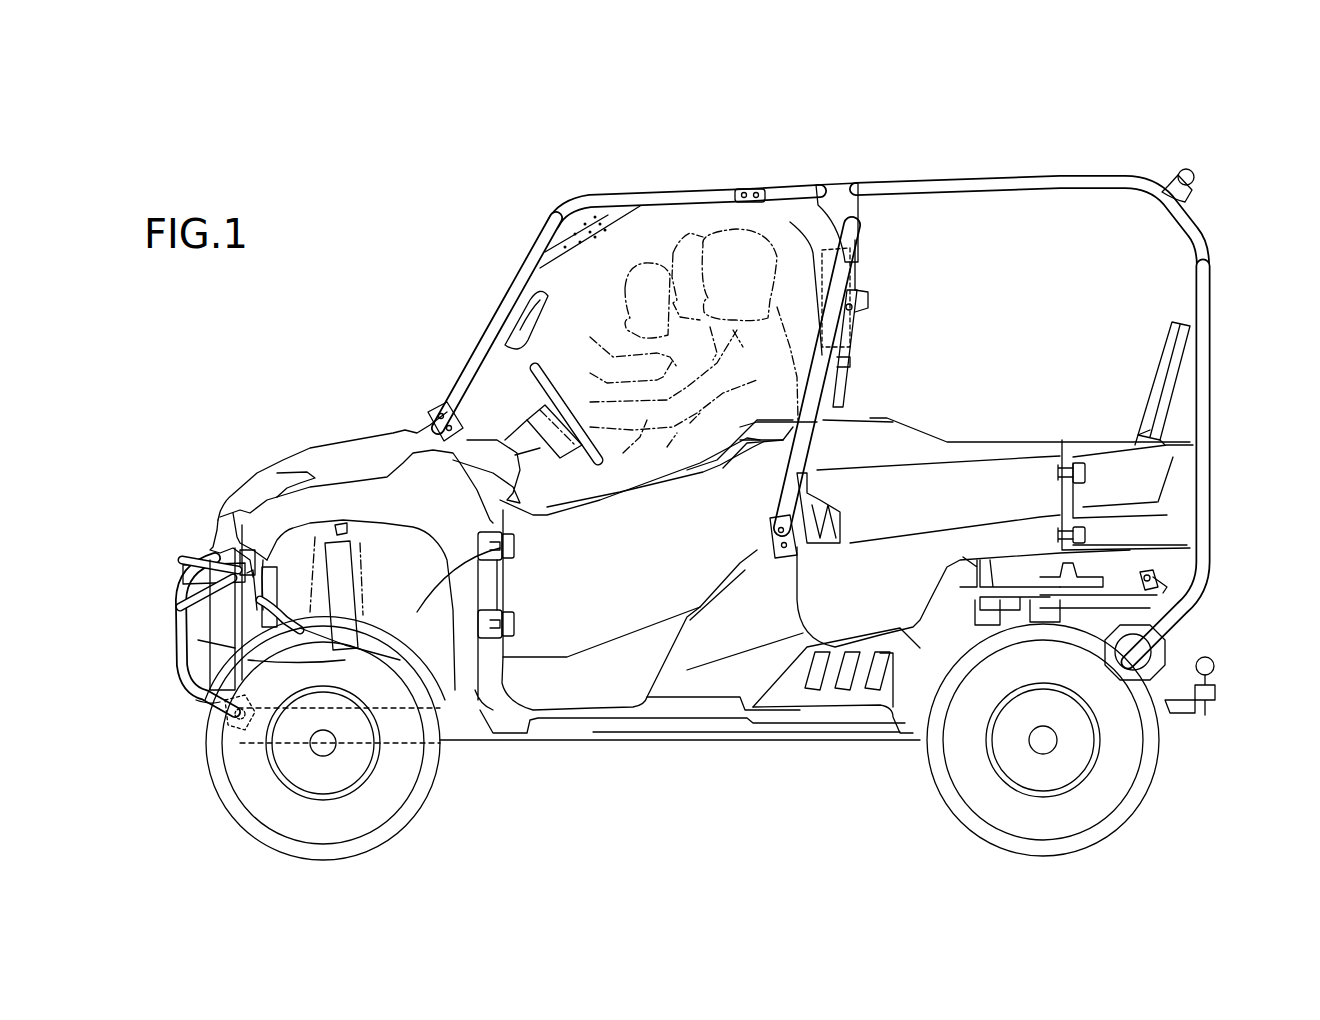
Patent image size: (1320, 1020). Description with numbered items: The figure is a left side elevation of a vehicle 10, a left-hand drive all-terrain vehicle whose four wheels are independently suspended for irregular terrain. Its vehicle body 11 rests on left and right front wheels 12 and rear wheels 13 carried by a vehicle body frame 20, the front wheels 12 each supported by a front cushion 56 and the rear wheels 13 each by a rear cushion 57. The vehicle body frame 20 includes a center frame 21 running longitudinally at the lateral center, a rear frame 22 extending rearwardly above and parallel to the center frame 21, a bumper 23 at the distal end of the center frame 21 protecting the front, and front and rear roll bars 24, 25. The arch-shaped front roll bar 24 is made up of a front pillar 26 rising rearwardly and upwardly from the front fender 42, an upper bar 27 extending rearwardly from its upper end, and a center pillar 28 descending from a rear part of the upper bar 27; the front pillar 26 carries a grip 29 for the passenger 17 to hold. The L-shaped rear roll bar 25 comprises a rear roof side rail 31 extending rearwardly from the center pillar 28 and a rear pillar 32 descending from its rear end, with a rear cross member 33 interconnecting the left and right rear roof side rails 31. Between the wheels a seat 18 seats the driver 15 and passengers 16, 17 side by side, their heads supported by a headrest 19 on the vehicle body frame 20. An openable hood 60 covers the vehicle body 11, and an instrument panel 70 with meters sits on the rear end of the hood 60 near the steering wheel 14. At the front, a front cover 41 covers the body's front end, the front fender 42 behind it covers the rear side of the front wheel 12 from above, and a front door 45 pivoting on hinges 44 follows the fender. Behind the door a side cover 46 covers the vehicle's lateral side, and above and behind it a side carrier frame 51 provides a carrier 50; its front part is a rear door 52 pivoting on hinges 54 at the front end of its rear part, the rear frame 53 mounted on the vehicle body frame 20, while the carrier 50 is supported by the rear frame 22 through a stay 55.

The vehicle 10 is at (440, 235).
The vehicle body 11 is at (432, 335).
The front wheel 12 is at (255, 790).
The rear wheel 13 is at (1123, 760).
The steering wheel 14 is at (522, 360).
The driver 15 is at (765, 235).
The passenger 16 is at (685, 235).
The passenger 17 is at (667, 263).
The seat 18 is at (855, 390).
The headrest 19 is at (814, 260).
The vehicle body frame 20 is at (785, 750).
The center frame 21 is at (527, 735).
The rear frame 22 is at (1125, 545).
The bumper 23 is at (190, 632).
The front roll bar 24 is at (727, 190).
The rear roll bar 25 is at (996, 176).
The front pillar 26 is at (518, 292).
The upper bar 27 is at (677, 194).
The center pillar 28 is at (835, 382).
The grip 29 is at (545, 260).
The rear roof side rail 31 is at (1071, 178).
The rear pillar 32 is at (1208, 317).
The rear cross member 33 is at (1186, 176).
The front cover 41 is at (263, 510).
The front fender 42 is at (363, 500).
The hinge 44 is at (478, 625).
The front door 45 is at (600, 580).
The side cover 46 is at (713, 640).
The carrier 50 is at (1053, 415).
The side carrier frame 51 is at (1117, 890).
The rear door 52 is at (990, 507).
The rear frame 53 is at (1077, 633).
The hinge 54 is at (1077, 520).
The stay 55 is at (1153, 565).
The front cushion 56 is at (405, 612).
The rear cushion 57 is at (962, 560).
The hood 60 is at (377, 452).
The instrument panel 70 is at (500, 437).